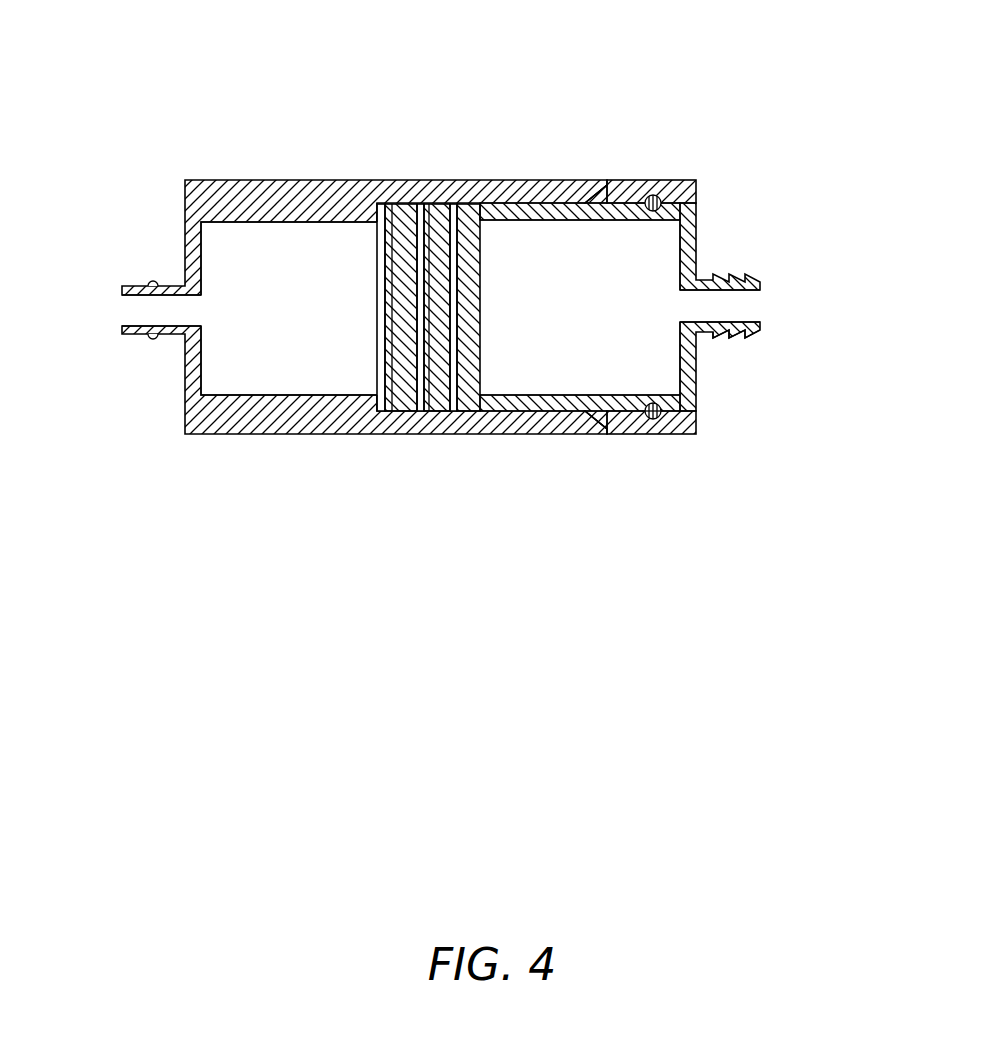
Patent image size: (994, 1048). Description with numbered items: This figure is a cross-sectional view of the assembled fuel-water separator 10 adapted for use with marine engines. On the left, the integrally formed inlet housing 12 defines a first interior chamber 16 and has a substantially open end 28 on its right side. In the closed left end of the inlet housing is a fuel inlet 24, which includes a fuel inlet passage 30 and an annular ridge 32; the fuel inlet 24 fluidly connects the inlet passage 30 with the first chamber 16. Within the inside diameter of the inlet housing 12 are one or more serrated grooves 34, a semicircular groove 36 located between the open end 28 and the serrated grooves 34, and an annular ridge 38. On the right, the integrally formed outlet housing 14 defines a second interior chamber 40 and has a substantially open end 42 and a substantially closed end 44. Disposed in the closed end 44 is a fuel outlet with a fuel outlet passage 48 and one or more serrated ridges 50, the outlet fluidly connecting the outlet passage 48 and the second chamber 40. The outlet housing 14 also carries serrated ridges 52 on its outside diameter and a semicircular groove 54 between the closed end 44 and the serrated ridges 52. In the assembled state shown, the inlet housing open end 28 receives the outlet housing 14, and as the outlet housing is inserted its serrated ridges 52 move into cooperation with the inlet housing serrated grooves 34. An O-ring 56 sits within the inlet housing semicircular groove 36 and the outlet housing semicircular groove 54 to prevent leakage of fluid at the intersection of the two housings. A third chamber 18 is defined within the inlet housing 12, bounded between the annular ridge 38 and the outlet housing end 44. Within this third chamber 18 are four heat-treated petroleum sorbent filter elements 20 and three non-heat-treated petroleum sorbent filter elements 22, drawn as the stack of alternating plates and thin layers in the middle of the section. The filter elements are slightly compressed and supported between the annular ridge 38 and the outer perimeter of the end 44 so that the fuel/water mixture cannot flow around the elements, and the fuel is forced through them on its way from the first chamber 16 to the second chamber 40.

The fluid treatment device 10 is at (197, 122).
The inlet housing 12 is at (297, 182).
The outlet housing 14 is at (697, 243).
The first interior chamber 16 is at (224, 341).
The third chamber 18 is at (393, 218).
The heat-treated petroleum sorbent filter elements 20 is at (377, 280).
The non-heat-treated petroleum sorbent filter elements 22 is at (407, 218).
The fuel inlet 24 is at (130, 284).
The open end 28 is at (697, 195).
The fuel inlet passage 30 is at (133, 313).
The annular ridge 32 is at (152, 337).
The serrated grooves 34 is at (596, 194).
The semicircular groove 36 is at (637, 413).
The annular ridge 38 is at (377, 222).
The second interior chamber 40 is at (622, 294).
The open end 42 is at (377, 310).
The closed end 44 is at (485, 222).
The fuel outlet passage 48 is at (745, 304).
The serrated ridges 50 is at (745, 341).
The serrated ridges 52 is at (616, 196).
The semicircular groove 54 is at (653, 407).
The O-ring 56 is at (653, 415).